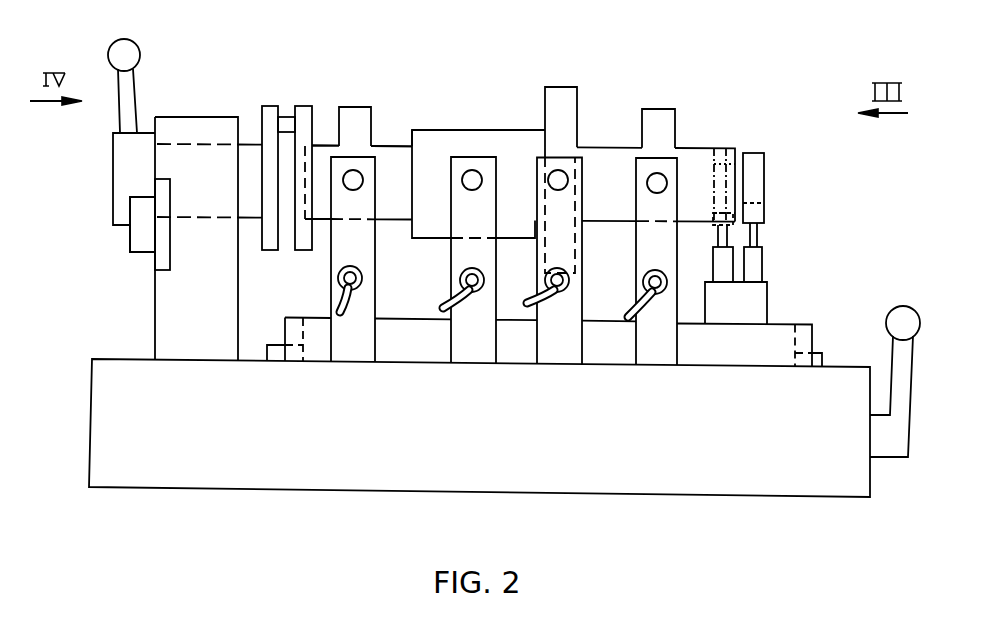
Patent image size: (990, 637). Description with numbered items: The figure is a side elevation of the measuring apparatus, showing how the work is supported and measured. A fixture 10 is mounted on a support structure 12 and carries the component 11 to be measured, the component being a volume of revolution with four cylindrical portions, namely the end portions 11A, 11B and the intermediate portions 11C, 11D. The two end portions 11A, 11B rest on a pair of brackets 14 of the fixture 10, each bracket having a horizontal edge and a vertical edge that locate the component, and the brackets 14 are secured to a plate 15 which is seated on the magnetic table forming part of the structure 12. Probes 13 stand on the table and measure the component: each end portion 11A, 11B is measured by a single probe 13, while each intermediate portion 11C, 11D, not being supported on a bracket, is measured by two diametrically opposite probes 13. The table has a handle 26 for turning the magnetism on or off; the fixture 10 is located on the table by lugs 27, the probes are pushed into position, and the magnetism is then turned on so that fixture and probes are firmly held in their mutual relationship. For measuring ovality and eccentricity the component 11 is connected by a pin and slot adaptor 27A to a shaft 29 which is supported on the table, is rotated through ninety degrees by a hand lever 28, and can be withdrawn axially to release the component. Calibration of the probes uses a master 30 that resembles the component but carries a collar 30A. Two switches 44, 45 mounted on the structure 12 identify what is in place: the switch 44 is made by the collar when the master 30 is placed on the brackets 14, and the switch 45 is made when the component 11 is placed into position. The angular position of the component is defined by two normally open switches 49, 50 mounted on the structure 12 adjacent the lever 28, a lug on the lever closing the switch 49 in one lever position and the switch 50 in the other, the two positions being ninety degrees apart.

The fixture 10 is at (735, 352).
The component 11 is at (437, 130).
The end portion 11A is at (385, 147).
The end portion 11B is at (693, 148).
The intermediate portion 11C is at (473, 130).
The intermediate portion 11D is at (558, 87).
The support structure 12 is at (870, 477).
The probes 13 is at (353, 354).
The brackets 14 is at (655, 109).
The plate 15 is at (408, 350).
The handle 26 is at (910, 412).
The lugs 27 is at (272, 346).
The pin and slot adaptor 27A is at (285, 117).
The hand lever 28 is at (140, 53).
The shaft 29 is at (248, 143).
The master 30 is at (765, 170).
The collar 30A is at (765, 203).
The switch 44 is at (722, 263).
The switch 45 is at (757, 265).
The switch 49 is at (142, 247).
The switch 50 is at (142, 224).